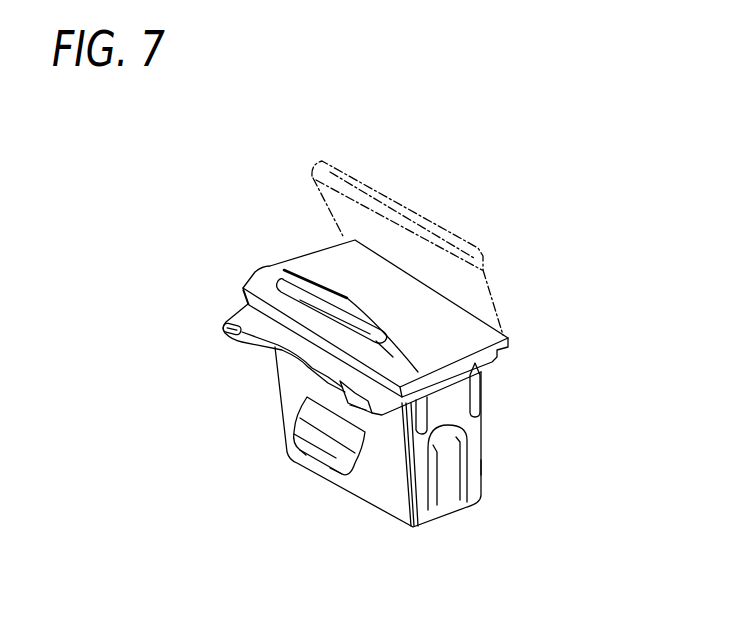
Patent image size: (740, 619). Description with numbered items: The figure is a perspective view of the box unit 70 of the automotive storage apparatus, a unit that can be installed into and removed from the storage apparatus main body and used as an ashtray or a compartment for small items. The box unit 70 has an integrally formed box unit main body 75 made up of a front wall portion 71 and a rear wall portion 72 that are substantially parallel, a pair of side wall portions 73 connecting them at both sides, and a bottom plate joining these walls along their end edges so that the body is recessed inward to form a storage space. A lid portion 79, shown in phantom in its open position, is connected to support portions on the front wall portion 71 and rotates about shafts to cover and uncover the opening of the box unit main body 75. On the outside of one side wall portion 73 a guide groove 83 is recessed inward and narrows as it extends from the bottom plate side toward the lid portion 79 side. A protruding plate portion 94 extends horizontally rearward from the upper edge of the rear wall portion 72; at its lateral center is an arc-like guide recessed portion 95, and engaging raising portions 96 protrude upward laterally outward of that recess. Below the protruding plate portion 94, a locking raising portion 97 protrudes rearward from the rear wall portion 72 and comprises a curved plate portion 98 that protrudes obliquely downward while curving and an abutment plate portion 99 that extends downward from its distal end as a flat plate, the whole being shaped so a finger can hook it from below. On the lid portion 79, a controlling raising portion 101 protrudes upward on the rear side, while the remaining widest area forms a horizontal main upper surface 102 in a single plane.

The box unit 70 is at (257, 238).
The front wall portion 71 is at (477, 438).
The rear wall portion 72 is at (388, 495).
The side wall portion 73 is at (458, 393).
The box unit main body 75 is at (499, 468).
The lid portion 79 is at (294, 240).
The guide groove 83 is at (445, 503).
The protruding plate portion 94 is at (244, 320).
The guide recessed portion 95 is at (298, 357).
The engaging raising portion 96 is at (224, 324).
The locking raising portion 97 is at (314, 455).
The curved plate portion 98 is at (313, 423).
The abutment plate portion 99 is at (333, 466).
The controlling raising portion 101 is at (343, 302).
The main upper surface 102 is at (453, 327).